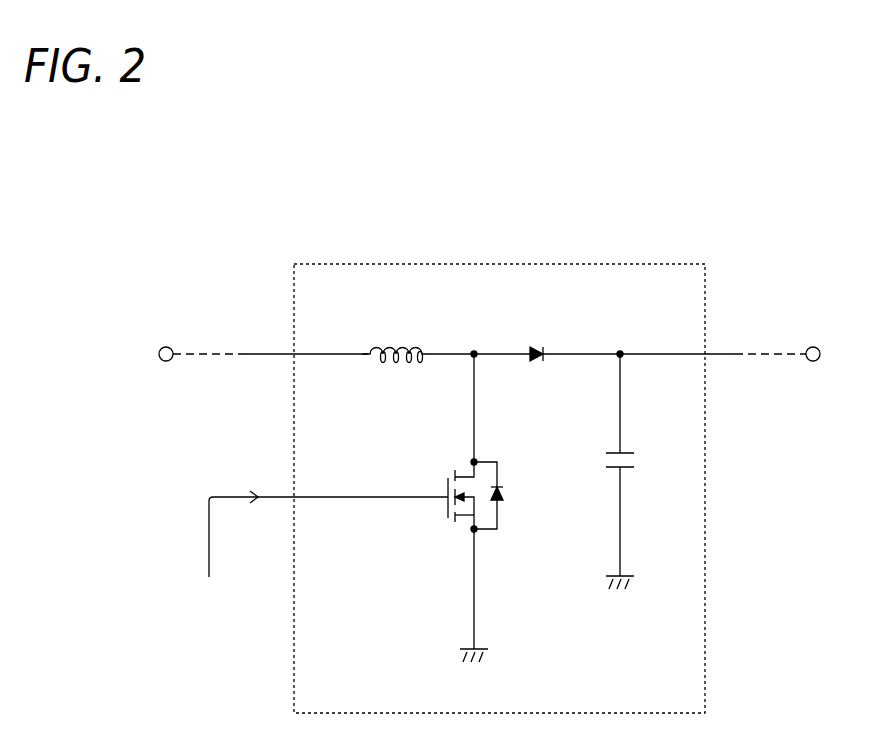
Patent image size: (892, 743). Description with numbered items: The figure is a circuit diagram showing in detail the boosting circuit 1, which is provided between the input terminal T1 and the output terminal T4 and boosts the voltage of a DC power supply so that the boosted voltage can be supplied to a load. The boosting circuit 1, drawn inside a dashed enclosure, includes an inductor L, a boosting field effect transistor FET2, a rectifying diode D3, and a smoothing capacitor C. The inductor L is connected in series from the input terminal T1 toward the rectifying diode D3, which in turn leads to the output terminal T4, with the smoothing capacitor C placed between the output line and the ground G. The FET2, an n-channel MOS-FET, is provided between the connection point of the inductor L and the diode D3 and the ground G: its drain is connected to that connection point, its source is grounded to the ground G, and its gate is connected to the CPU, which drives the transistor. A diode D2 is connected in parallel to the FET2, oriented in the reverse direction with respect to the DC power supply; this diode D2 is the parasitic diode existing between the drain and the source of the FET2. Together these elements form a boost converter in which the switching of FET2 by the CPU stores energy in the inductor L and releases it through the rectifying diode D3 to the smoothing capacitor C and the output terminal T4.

The boosting circuit 1 is at (705, 474).
The input terminal T1 is at (160, 348).
The output terminal T4 is at (819, 348).
The inductor L is at (396, 341).
The rectifying diode D3 is at (537, 342).
The diode D2 is at (503, 495).
The boosting field effect transistor FET2 is at (436, 499).
The smoothing capacitor C is at (609, 465).
The ground G is at (547, 608).
The element CPU is at (322, 547).